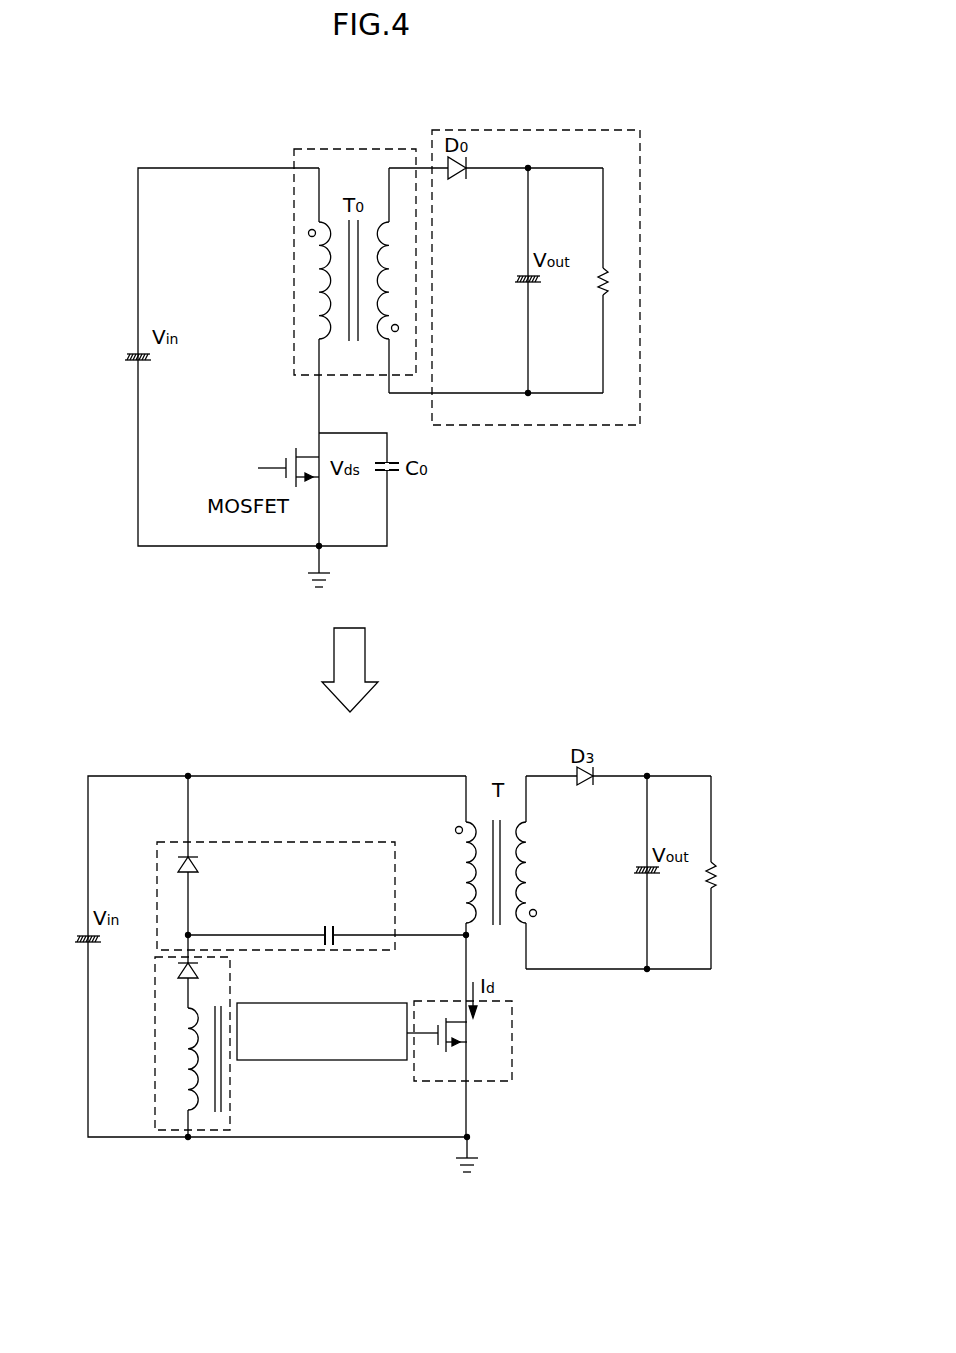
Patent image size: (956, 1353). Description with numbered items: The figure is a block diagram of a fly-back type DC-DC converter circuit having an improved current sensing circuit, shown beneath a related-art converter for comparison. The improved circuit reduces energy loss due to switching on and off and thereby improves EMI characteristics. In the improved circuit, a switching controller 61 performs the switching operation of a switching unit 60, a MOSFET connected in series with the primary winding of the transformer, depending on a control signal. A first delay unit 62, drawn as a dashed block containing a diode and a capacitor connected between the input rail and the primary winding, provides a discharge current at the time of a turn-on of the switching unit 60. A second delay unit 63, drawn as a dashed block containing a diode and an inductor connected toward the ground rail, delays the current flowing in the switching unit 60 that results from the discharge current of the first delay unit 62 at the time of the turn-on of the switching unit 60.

The switching unit 60 is at (513, 1042).
The switching controller 61 is at (322, 1062).
The first delay unit 62 is at (240, 841).
The second delay unit 63 is at (155, 1092).